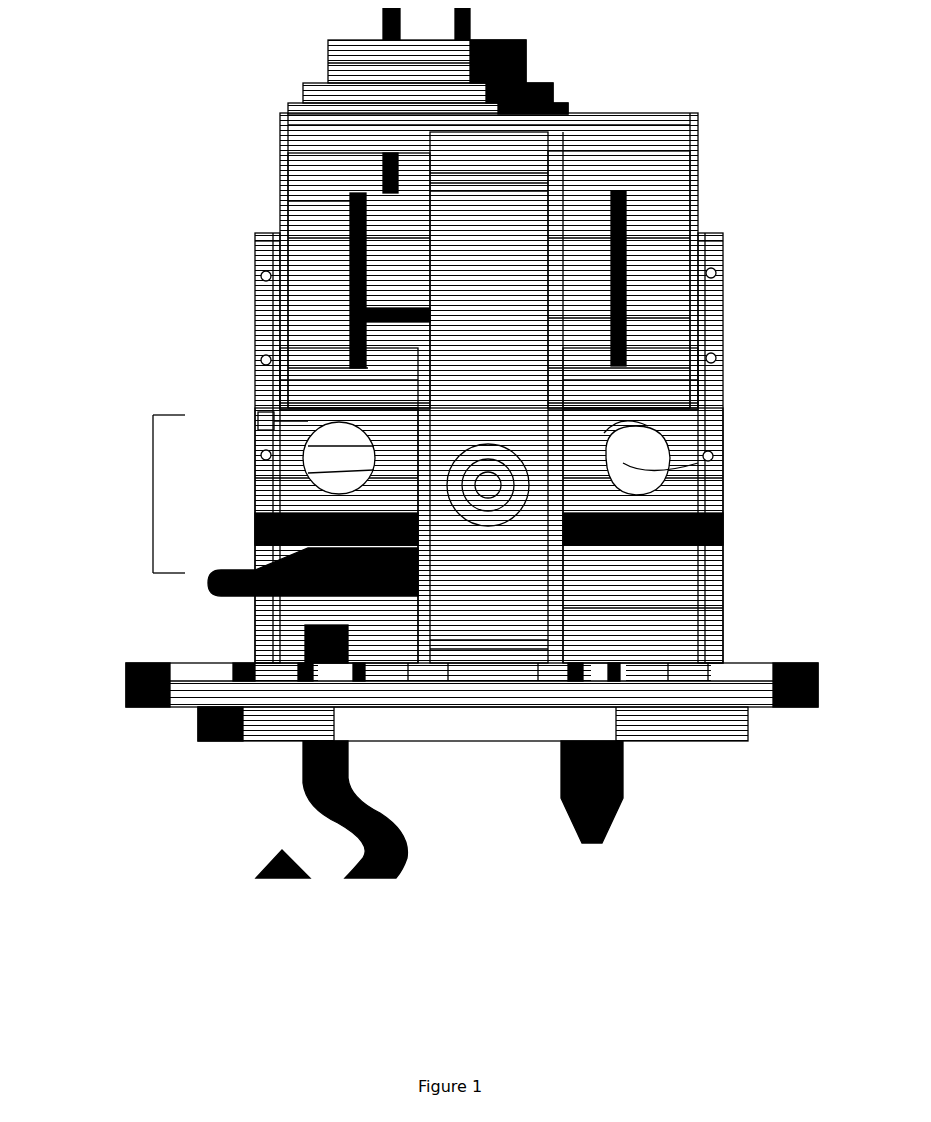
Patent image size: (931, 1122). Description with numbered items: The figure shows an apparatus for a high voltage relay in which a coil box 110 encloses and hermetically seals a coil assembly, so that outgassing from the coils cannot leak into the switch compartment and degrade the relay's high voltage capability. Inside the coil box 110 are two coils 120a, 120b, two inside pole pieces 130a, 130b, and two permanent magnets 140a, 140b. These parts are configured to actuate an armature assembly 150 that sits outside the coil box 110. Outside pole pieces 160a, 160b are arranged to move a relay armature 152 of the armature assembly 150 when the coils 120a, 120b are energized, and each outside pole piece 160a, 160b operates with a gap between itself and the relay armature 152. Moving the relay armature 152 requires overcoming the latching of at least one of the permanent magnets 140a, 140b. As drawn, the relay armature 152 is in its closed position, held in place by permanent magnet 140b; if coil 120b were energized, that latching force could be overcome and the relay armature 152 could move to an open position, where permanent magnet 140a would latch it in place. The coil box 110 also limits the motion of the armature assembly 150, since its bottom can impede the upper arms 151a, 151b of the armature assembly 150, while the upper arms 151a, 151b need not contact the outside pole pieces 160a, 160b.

The coil box 110 is at (270, 125).
The coil 120a is at (380, 248).
The coil 120b is at (572, 245).
The inside pole piece 130a is at (305, 275).
The inside pole piece 130b is at (650, 302).
The permanent magnet 140a is at (303, 383).
The permanent magnet 140b is at (653, 383).
The armature assembly 150 is at (144, 484).
The upper arm 151a is at (255, 413).
The upper arm 151b is at (612, 423).
The relay armature 152 is at (293, 550).
The outside pole piece 160a is at (355, 447).
The outside pole piece 160b is at (665, 470).